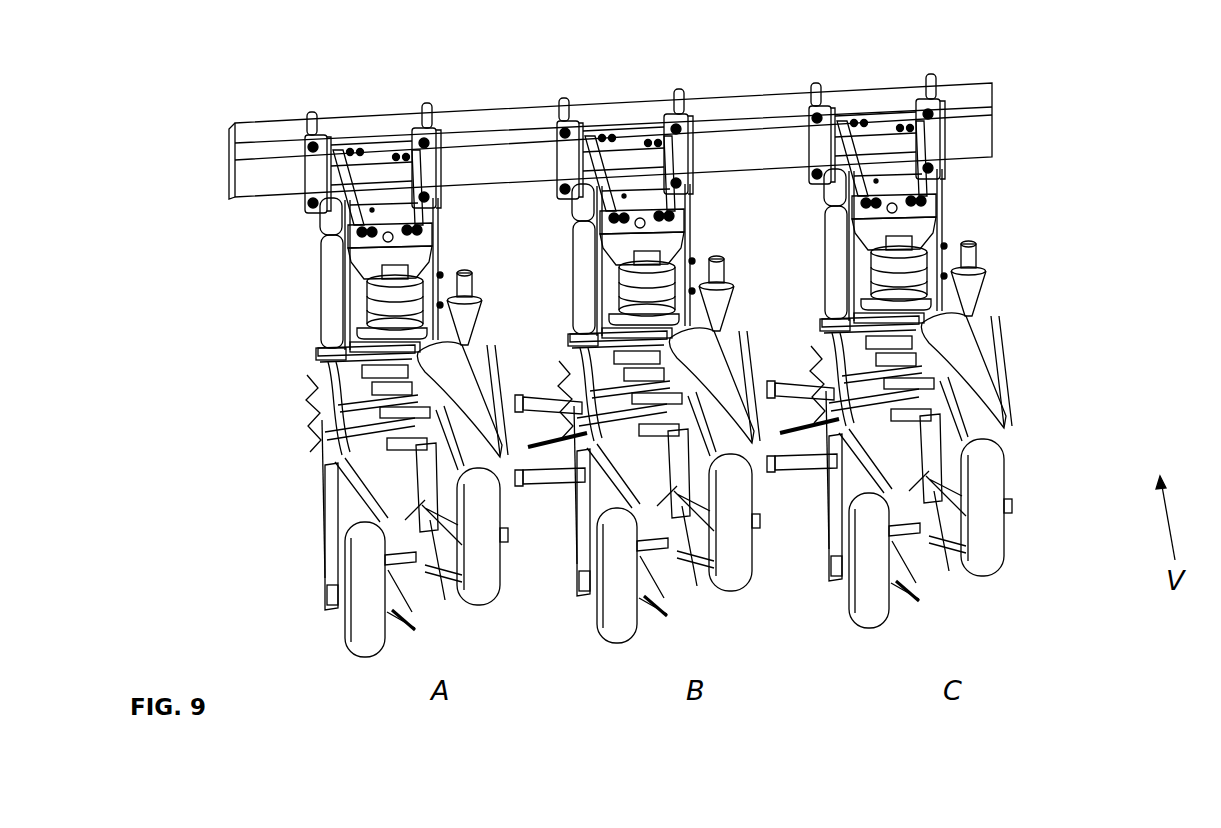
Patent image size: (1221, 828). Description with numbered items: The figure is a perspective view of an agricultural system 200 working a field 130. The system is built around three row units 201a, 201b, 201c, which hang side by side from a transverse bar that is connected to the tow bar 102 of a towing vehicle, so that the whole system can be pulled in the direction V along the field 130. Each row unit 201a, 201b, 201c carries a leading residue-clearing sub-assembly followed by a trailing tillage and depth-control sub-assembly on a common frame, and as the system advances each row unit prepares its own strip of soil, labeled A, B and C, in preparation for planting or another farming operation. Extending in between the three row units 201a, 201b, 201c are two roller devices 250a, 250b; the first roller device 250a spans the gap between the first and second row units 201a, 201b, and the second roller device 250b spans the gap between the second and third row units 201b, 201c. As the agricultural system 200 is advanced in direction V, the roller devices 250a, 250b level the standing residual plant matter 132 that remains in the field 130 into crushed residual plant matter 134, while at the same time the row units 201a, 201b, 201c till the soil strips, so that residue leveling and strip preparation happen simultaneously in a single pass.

The tow bar 102 is at (996, 150).
The field 130 is at (178, 269).
The standing residual plant matter 132 is at (1110, 302).
The crushed residual plant matter 134 is at (592, 650).
The agricultural system 200 is at (1093, 76).
The row unit 201a is at (450, 268).
The row unit 201b is at (702, 254).
The row unit 201c is at (955, 240).
The roller device 250a is at (552, 422).
The roller device 250b is at (805, 408).